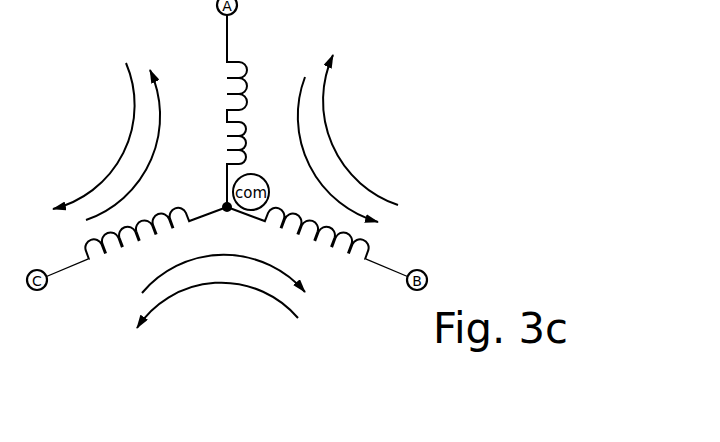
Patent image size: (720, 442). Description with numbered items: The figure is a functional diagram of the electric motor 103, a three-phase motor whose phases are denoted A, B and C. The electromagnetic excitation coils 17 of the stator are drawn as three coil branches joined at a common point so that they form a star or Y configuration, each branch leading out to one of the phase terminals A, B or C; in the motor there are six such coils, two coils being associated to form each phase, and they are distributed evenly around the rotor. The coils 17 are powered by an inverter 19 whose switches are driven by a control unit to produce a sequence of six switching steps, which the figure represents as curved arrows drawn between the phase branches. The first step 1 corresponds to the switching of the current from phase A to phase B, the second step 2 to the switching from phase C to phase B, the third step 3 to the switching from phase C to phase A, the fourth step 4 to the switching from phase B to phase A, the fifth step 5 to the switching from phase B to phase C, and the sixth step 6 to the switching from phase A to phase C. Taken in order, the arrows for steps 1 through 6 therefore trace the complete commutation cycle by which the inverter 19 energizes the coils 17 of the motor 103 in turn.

The electromagnetic excitation coils 17 is at (248, 67).
The inverter 19 is at (21, 10).
The electric motor 103 is at (380, 69).
The first step 1 is at (333, 149).
The second step 2 is at (223, 262).
The third step 3 is at (127, 145).
The fourth step 4 is at (360, 130).
The fifth step 5 is at (217, 305).
The sixth step 6 is at (94, 136).